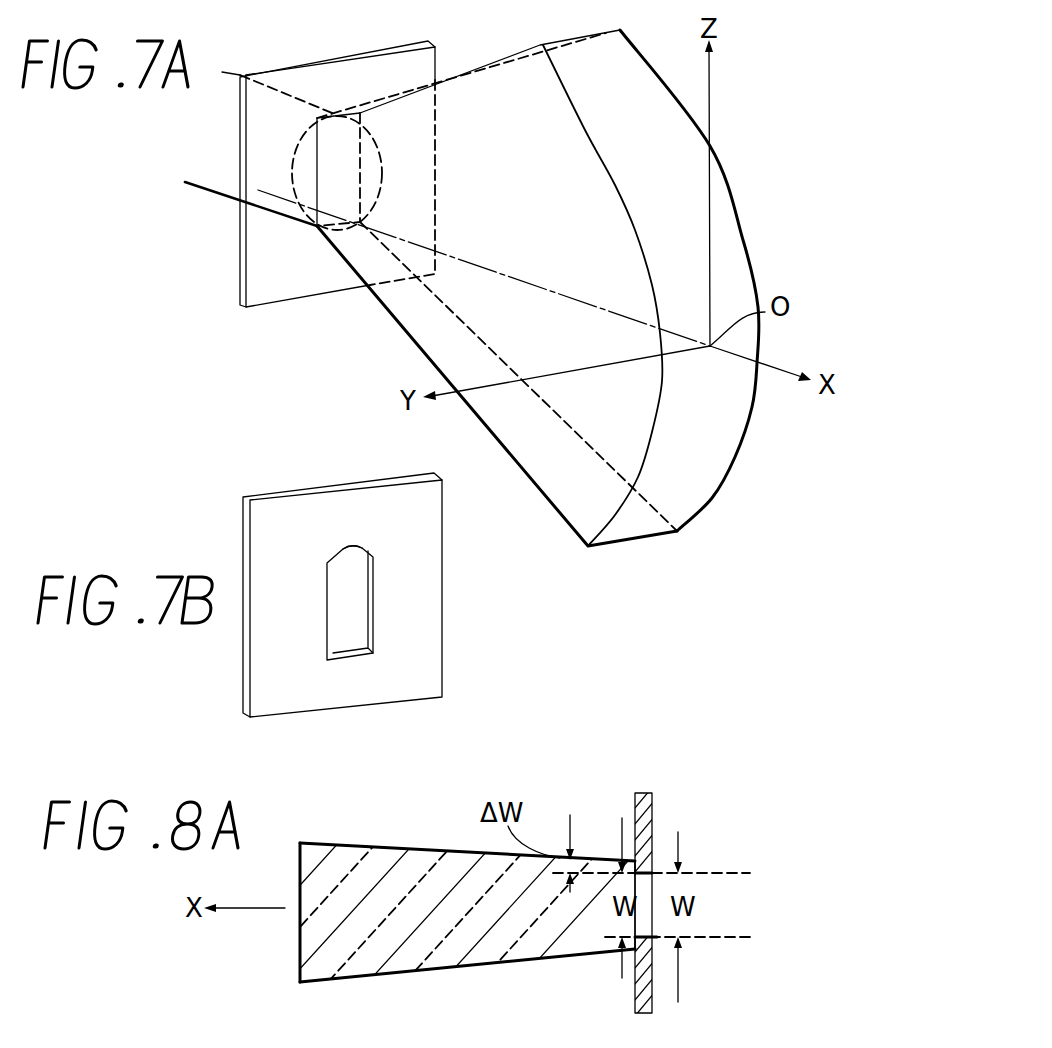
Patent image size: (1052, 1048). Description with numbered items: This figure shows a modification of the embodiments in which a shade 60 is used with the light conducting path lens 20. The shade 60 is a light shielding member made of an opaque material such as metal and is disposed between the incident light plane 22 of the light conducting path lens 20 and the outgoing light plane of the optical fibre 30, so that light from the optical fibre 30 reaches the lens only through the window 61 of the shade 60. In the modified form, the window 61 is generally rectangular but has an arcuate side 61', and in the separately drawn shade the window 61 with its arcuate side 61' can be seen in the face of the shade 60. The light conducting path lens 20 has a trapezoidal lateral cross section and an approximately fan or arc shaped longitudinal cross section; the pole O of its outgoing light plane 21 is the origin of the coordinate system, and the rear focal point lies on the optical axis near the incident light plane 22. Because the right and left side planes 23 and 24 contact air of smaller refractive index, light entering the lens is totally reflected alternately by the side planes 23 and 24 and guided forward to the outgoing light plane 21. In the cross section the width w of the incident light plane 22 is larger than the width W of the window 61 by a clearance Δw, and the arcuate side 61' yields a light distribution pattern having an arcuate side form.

In FIG. 7A, the light conducting path lens 20 is at (502, 452).
In FIG. 8A, the light conducting path lens 20 is at (500, 956).
In FIG. 8A, the outgoing light plane 21 is at (300, 955).
In FIG. 8A, the incident light plane 22 is at (633, 952).
In FIG. 8A, the right side plane 23 is at (397, 843).
In FIG. 8A, the left side plane 24 is at (397, 975).
In FIG. 7A, the optical fibre 30 is at (223, 183).
In FIG. 8A, the optical fibre 30 is at (720, 893).
In FIG. 7A, the shade 60 is at (290, 298).
In FIG. 7B, the shade 60 is at (423, 630).
In FIG. 8A, the shade 60 is at (648, 792).
In FIG. 7A, the window 61 is at (269, 171).
In FIG. 7B, the window 61 is at (408, 603).
In FIG. 8A, the window 61 is at (651, 864).
In FIG. 7B, the arcuate side 61' is at (341, 494).